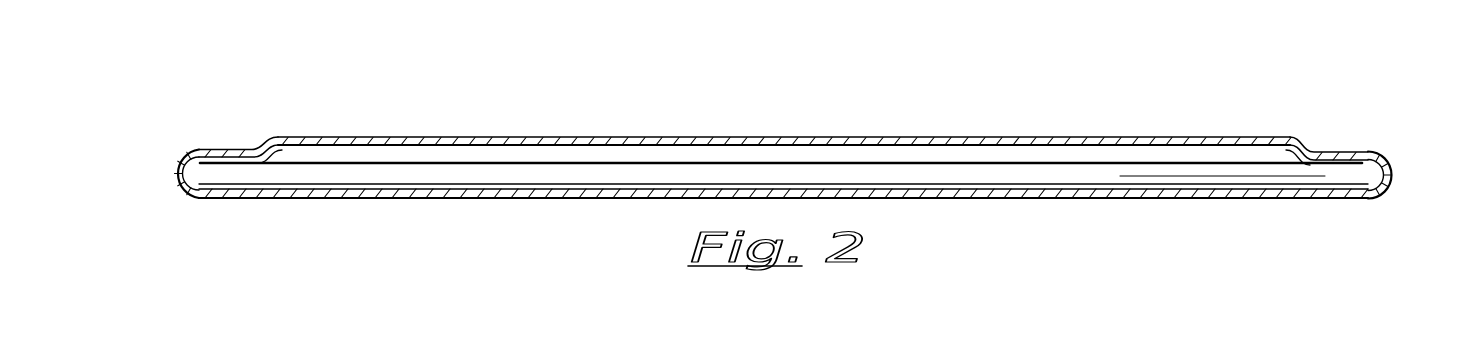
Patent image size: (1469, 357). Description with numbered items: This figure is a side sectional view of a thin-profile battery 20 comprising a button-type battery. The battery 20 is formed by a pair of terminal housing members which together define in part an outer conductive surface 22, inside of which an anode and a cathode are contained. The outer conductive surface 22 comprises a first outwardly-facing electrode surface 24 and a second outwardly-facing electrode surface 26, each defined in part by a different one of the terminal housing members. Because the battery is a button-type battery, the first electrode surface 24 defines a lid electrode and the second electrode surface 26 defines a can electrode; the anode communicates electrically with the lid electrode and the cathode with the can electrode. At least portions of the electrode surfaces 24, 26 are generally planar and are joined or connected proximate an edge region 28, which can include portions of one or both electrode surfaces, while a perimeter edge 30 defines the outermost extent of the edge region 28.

The battery 20 is at (1063, 70).
The outer conductive surface 22 is at (224, 139).
The first electrode surface 24 is at (678, 136).
The second electrode surface 26 is at (437, 201).
The edge region 28 is at (1373, 134).
The perimeter edge 30 is at (173, 167).